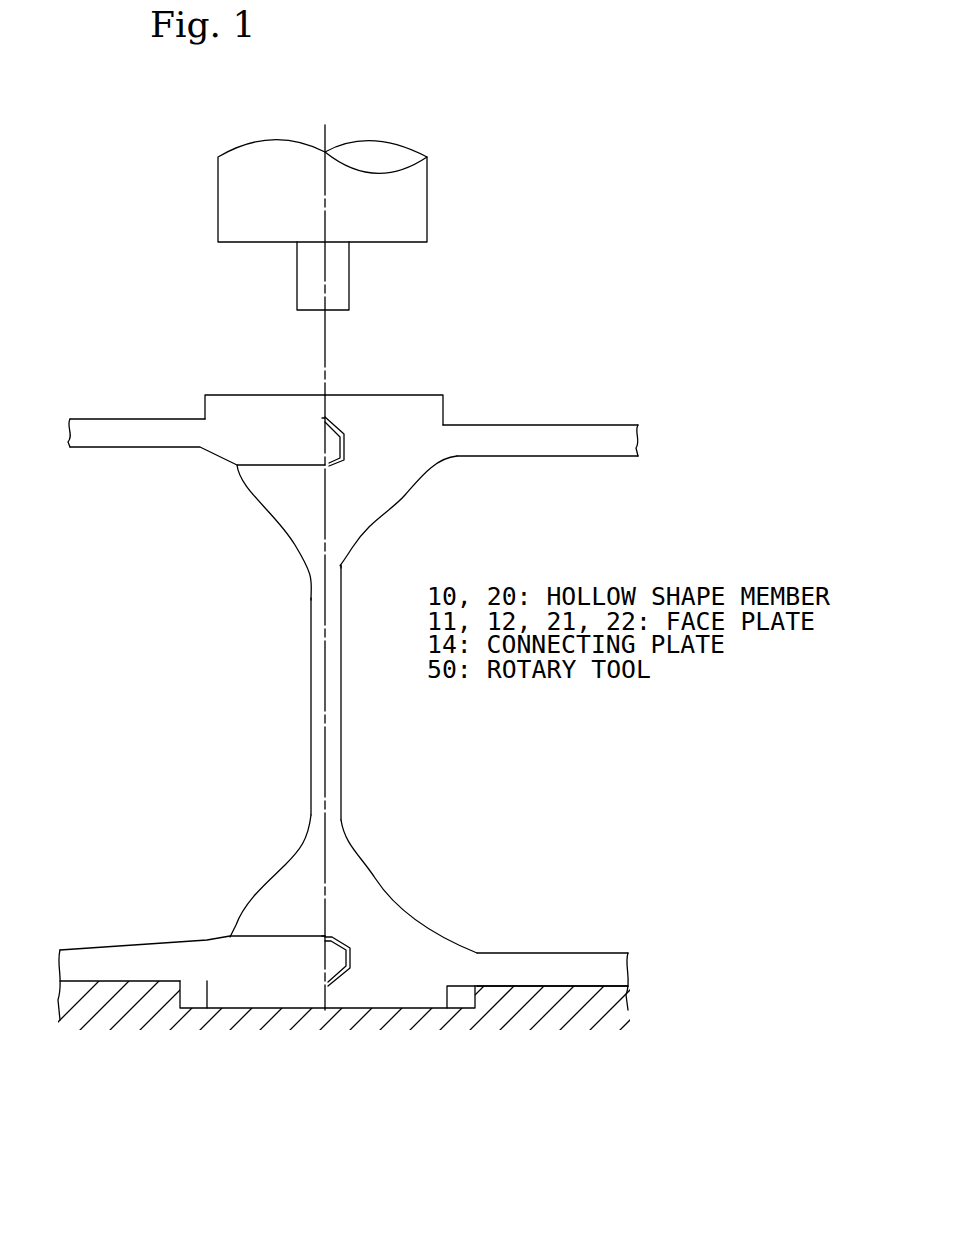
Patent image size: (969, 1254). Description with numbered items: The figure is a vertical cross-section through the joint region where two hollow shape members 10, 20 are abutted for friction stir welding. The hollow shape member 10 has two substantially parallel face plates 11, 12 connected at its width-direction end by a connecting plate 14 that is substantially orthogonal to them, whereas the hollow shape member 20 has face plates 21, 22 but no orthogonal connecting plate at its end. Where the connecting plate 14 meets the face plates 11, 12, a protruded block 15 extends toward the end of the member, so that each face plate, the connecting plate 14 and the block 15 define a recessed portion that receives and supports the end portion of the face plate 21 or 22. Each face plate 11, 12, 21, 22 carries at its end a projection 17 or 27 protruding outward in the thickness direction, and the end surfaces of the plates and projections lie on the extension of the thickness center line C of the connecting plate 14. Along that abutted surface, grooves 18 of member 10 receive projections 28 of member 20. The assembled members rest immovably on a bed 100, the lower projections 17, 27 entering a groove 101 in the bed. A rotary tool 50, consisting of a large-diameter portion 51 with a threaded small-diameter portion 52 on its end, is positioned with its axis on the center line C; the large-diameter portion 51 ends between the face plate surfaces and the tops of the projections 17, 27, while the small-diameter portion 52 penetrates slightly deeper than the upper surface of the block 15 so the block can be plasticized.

The hollow shape member 10 is at (427, 706).
The hollow shape member 20 is at (195, 701).
The face plate 11 is at (530, 420).
The face plate 12 is at (568, 950).
The face plate 21 is at (130, 419).
The face plate 22 is at (115, 950).
The connecting plate 14 is at (318, 703).
The protruded block 15 is at (276, 502).
The projection 17 is at (420, 410).
The groove 18 is at (348, 438).
The projection 27 is at (237, 410).
The projection 28 is at (333, 440).
The rotary tool 50 is at (362, 189).
The large-diameter portion 51 is at (427, 200).
The small-diameter portion 52 is at (349, 278).
The bed 100 is at (463, 1022).
The groove 101 is at (193, 1000).
The center line of thickness C is at (325, 643).